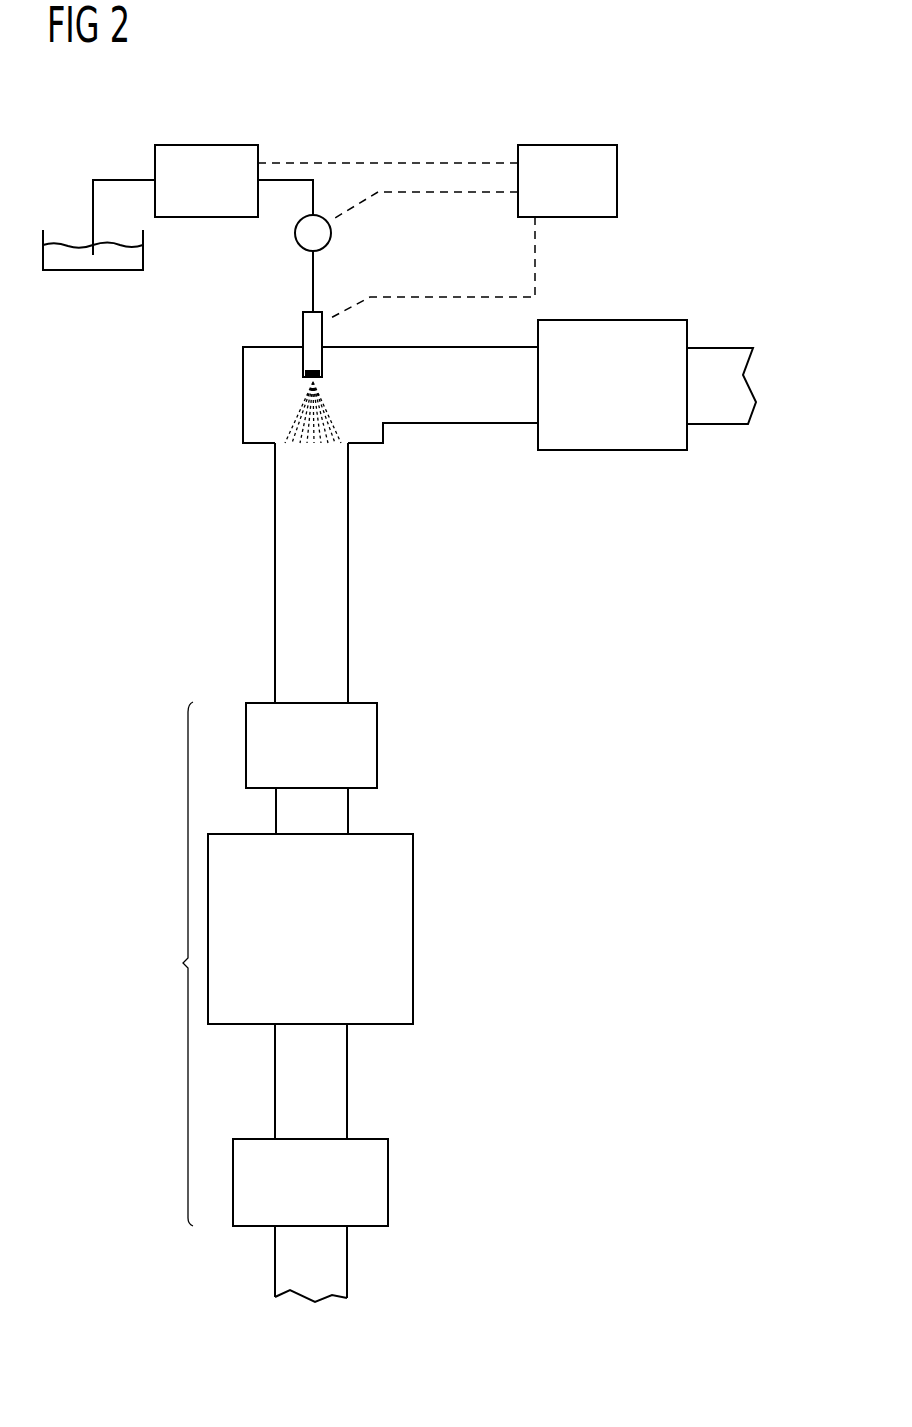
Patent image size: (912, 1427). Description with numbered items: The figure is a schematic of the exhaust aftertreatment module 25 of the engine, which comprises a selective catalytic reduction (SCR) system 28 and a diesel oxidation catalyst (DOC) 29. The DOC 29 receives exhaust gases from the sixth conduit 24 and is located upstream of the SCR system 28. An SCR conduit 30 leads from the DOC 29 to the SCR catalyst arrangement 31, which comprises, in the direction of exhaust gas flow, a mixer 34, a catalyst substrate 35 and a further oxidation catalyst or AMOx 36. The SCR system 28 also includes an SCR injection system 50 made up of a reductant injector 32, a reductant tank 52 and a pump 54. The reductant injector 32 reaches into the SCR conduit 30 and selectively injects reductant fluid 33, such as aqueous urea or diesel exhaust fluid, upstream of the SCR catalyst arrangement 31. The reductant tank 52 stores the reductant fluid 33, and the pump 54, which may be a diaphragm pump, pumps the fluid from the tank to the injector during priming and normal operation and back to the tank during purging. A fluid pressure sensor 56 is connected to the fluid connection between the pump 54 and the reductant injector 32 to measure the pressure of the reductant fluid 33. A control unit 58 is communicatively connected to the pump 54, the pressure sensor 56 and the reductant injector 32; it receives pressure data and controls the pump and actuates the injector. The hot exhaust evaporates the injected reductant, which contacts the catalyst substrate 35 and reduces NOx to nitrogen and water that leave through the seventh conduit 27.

The sixth conduit 24 is at (717, 348).
The exhaust aftertreatment module 25 is at (643, 977).
The seventh conduit 27 is at (347, 1268).
The selective catalytic reduction (SCR) system 28 is at (523, 762).
The diesel oxidation catalyst (DOC) 29 is at (637, 320).
The SCR conduit 30 is at (348, 553).
The SCR catalyst arrangement 31 is at (171, 964).
The reductant injector 32 is at (303, 330).
The reductant fluid 33 is at (130, 258).
The mixer 34 is at (377, 745).
The catalyst substrate 35 is at (414, 883).
The further oxidation catalyst or AMOx 36 is at (388, 1176).
The SCR injection system 50 is at (107, 143).
The reductant tank 52 is at (72, 270).
The pump 54 is at (229, 145).
The fluid pressure sensor 56 is at (331, 236).
The control unit 58 is at (575, 145).